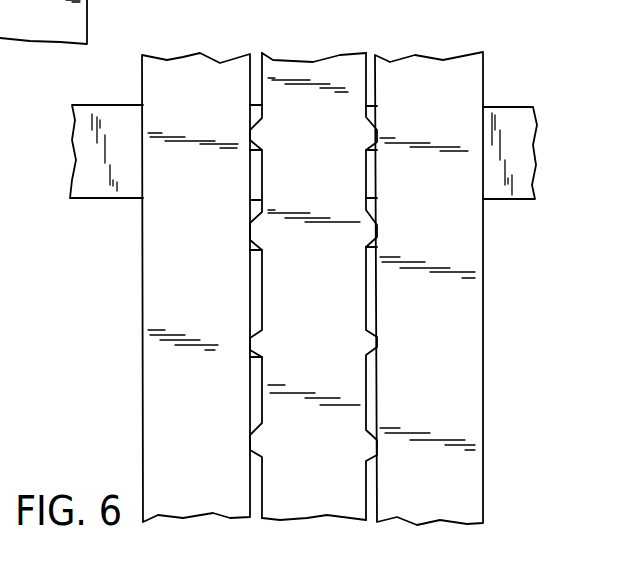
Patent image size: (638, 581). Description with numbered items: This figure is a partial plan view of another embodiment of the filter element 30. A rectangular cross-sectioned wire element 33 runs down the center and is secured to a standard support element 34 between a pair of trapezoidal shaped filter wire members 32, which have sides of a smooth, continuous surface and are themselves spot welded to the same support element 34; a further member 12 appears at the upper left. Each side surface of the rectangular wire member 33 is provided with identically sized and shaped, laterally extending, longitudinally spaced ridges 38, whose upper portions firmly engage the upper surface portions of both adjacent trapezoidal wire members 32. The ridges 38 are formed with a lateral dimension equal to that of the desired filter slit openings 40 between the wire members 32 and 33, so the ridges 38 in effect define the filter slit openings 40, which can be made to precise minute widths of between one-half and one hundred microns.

The frame member 12 is at (23, 32).
The filter element 30 is at (420, 38).
The trapezoidal shaped filter wire members 32 is at (183, 63).
The rectangular cross-sectioned wire elements 33 is at (295, 70).
The support element 34 is at (493, 192).
The ridges 38 is at (250, 133).
The filter slit openings 40 is at (253, 168).